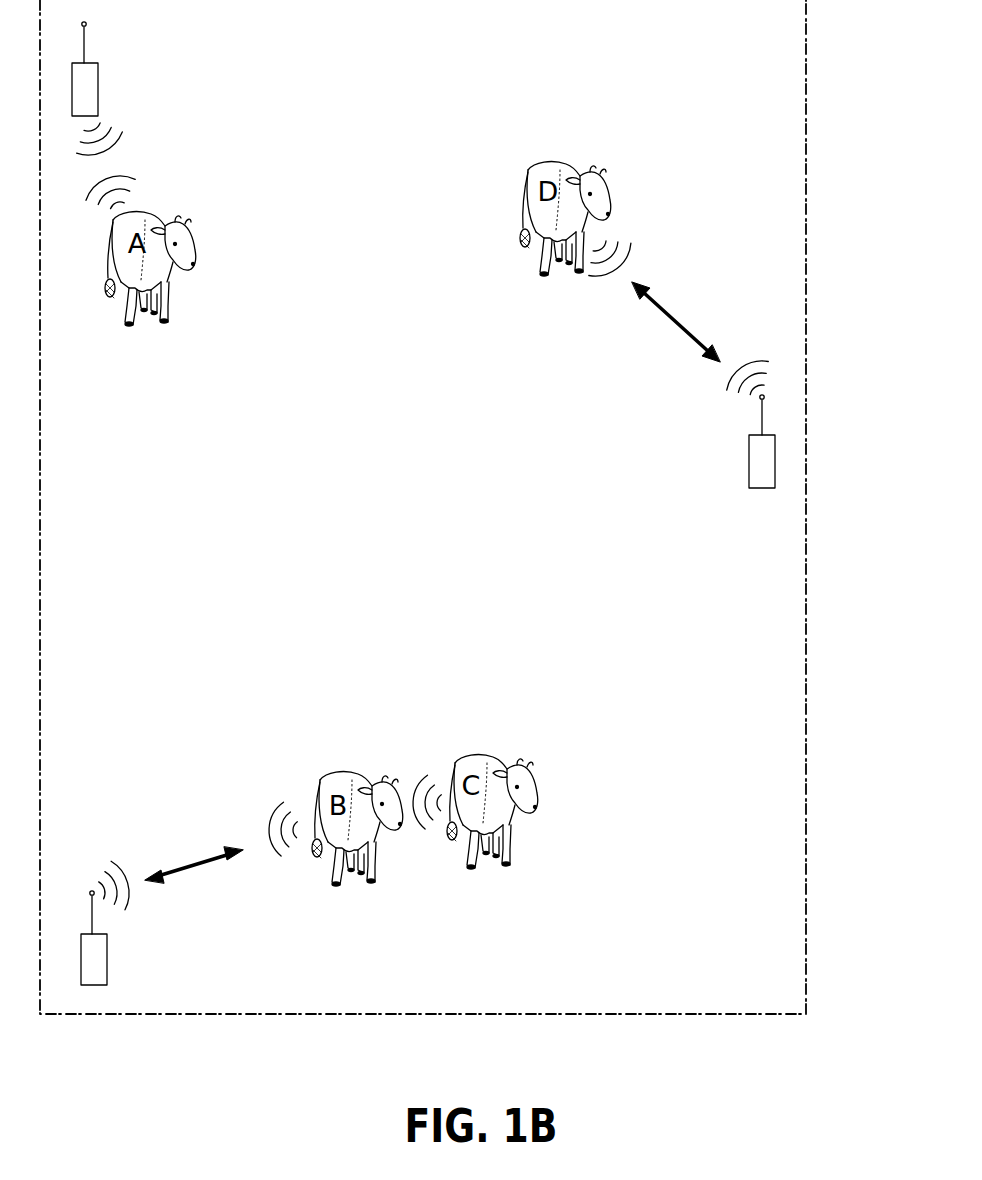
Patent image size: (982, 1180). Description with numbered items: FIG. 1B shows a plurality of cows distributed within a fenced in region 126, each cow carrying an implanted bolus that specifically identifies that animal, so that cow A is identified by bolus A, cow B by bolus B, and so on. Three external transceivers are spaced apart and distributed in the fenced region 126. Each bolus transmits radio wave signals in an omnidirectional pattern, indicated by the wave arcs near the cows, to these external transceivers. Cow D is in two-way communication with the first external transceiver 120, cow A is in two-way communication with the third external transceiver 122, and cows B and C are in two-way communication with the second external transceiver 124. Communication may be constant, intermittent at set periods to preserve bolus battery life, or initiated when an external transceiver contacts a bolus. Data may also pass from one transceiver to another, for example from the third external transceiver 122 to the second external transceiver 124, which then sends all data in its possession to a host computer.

The external transceiver #1 120 is at (748, 470).
The external transceiver #3 122 is at (98, 80).
The external transceiver #2 124 is at (107, 939).
The fenced in region 126 is at (808, 757).